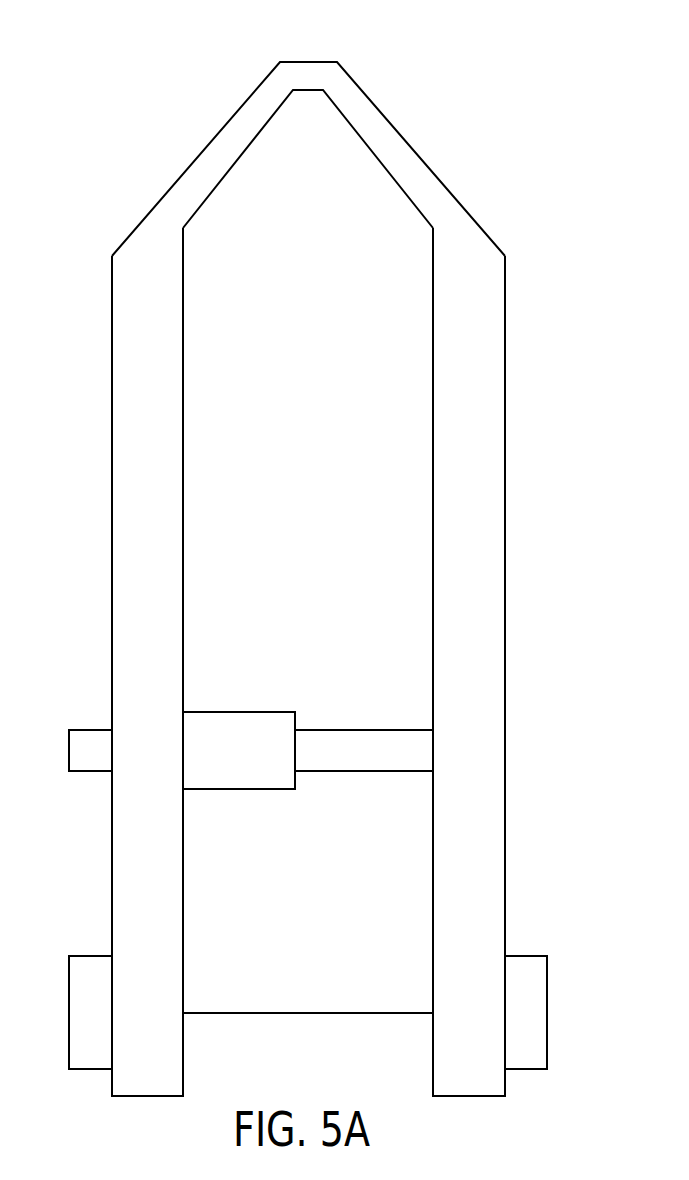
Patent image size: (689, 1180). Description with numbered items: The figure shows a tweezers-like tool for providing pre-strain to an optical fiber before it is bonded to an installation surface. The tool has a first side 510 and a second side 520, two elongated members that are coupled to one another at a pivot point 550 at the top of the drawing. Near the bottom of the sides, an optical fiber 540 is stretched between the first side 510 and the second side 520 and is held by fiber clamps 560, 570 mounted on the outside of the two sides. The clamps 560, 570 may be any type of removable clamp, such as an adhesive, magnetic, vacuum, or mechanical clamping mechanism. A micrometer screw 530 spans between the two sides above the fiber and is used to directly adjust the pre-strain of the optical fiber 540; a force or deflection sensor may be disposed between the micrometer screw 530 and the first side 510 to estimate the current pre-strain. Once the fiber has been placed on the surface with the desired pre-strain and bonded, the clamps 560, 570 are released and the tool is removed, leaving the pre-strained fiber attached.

The first side 510 is at (125, 542).
The second side 520 is at (492, 627).
The micrometer screw 530 is at (237, 722).
The optical fiber 540 is at (300, 1013).
The pivot point 550 is at (318, 62).
The fiber clamp 560 is at (95, 962).
The fiber clamp 570 is at (522, 965).